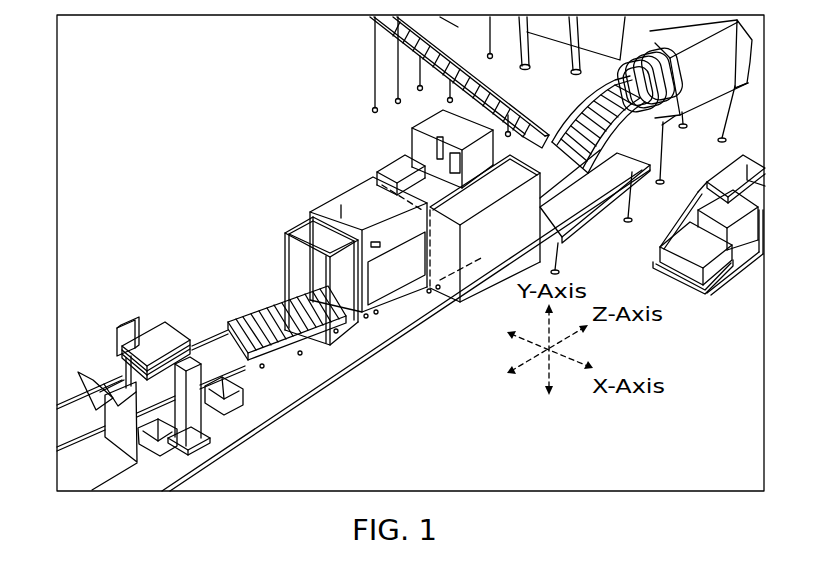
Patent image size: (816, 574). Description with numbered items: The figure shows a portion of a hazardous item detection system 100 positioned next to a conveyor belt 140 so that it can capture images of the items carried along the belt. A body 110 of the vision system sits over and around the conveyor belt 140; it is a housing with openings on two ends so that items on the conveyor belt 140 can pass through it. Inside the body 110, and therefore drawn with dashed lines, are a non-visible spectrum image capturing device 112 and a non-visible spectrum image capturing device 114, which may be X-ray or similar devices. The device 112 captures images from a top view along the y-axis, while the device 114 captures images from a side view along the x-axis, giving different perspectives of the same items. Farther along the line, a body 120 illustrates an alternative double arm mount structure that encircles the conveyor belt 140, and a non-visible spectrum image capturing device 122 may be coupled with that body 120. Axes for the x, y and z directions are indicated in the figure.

The hazardous item detection system 100 is at (430, 96).
The body 110 is at (363, 210).
The non-visible spectrum image capturing device 112 is at (440, 188).
The non-visible spectrum image capturing device 114 is at (458, 288).
The body 120 is at (200, 421).
The non-visible spectrum image capturing device 122 is at (162, 334).
The conveyor belt 140 is at (267, 303).